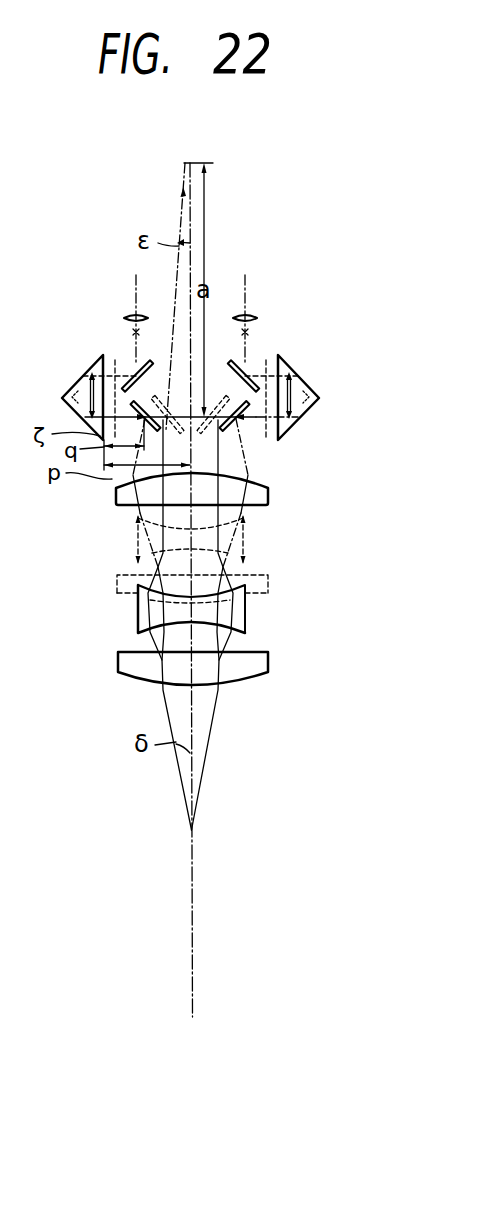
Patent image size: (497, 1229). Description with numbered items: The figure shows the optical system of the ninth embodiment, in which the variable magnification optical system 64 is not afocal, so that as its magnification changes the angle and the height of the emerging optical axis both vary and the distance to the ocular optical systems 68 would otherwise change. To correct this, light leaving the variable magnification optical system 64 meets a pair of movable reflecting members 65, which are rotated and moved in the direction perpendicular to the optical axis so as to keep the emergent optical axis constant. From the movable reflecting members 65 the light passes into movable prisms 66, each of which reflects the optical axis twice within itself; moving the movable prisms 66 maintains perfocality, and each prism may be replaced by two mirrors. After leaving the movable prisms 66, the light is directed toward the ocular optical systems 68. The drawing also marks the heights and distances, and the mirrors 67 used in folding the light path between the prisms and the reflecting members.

The variable magnification optical system 64 is at (84, 478).
The movable reflecting member 65 is at (154, 403).
The movable prism 66 is at (62, 399).
The mirror 67 is at (136, 362).
The ocular optical system 68 is at (110, 290).